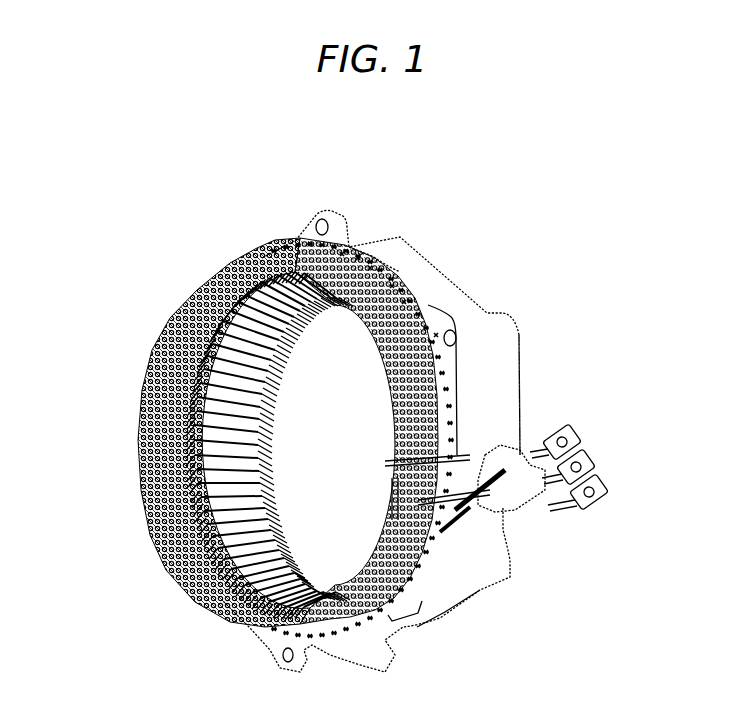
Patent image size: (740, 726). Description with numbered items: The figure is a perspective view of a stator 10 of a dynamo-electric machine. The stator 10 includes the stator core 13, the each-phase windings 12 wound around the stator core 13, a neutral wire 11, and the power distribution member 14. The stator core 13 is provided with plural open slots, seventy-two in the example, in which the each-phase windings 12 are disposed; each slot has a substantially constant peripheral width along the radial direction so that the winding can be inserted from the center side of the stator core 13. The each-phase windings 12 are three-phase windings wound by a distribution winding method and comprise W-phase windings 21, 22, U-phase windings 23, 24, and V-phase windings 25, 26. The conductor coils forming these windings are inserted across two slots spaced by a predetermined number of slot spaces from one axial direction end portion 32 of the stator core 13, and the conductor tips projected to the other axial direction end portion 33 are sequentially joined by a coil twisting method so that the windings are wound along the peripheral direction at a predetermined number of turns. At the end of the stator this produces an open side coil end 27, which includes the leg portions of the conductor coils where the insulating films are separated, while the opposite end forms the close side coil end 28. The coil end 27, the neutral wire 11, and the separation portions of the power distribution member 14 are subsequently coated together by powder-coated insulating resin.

The stator 10 is at (141, 613).
The neutral wire 11 is at (366, 598).
The each-phase winding 12 is at (358, 141).
The stator core 13 is at (420, 456).
The power distribution member 14 is at (560, 432).
The W-phase winding 21 is at (342, 251).
The W-phase winding 22 is at (358, 254).
The U-phase winding 23 is at (368, 266).
The U-phase winding 24 is at (391, 286).
The V-phase winding 25 is at (402, 301).
The V-phase winding 26 is at (436, 333).
The open side coil end 27 is at (252, 250).
The close side coil end 28 is at (281, 420).
The axial direction end face 32 is at (524, 372).
The axial direction end face 33 is at (447, 322).